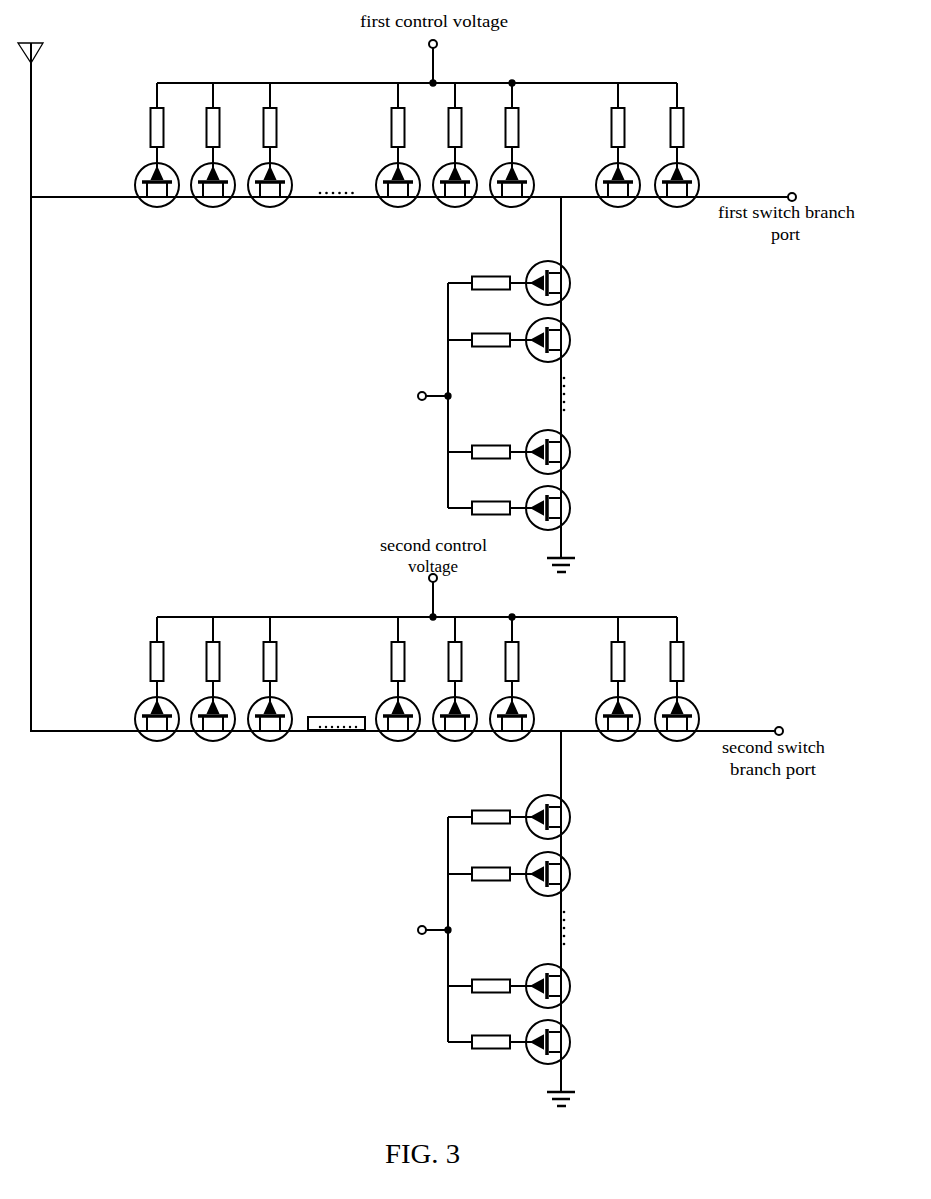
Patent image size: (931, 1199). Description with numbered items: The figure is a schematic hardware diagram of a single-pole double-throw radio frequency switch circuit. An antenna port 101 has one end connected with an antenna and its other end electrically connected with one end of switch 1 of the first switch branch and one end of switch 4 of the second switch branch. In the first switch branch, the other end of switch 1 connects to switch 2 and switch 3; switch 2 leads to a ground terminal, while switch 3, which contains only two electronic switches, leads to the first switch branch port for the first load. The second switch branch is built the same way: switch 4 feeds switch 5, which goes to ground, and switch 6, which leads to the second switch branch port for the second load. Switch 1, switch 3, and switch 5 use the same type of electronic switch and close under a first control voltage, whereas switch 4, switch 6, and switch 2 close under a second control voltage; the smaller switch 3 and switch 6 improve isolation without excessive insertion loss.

The switch 1 is at (292, 73).
The switch 2 is at (599, 332).
The switch 3 is at (687, 98).
The switch 4 is at (280, 604).
The switch 5 is at (577, 913).
The switch 6 is at (693, 593).
The antenna port 101 is at (95, 387).